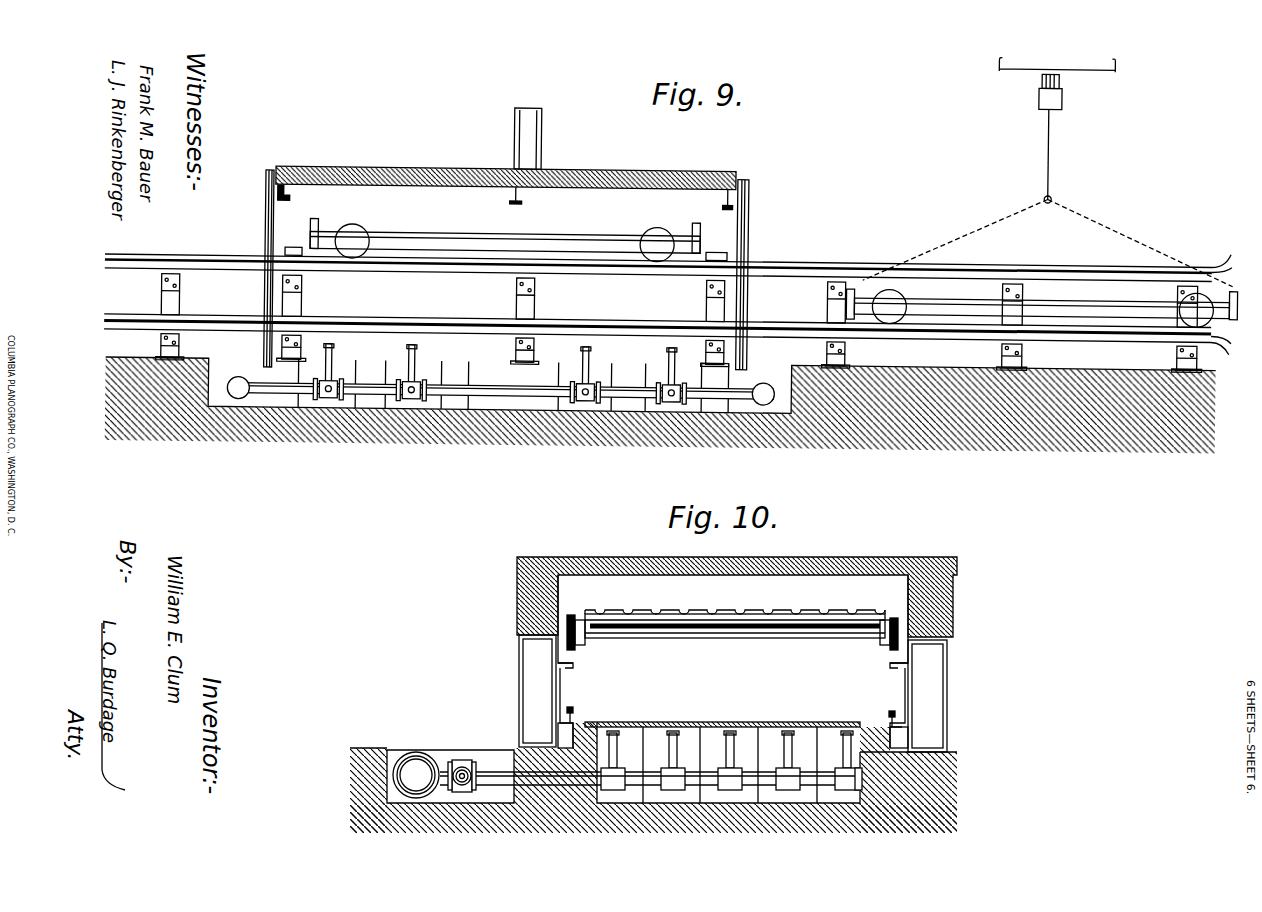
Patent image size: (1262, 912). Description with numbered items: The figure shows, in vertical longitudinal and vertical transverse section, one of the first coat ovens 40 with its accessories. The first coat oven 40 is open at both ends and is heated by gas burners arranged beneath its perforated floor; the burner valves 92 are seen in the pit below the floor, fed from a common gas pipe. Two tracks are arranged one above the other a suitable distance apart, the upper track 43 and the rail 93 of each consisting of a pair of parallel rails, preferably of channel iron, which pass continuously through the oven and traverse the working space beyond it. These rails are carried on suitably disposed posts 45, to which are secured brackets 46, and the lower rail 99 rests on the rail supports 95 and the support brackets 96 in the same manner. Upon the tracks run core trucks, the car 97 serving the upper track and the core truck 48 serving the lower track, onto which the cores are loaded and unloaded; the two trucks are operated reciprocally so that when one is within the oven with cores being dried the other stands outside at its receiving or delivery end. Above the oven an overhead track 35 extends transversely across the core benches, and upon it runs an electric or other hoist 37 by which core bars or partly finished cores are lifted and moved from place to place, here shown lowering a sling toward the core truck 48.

In FIG. 9, the overhead track 35 is at (1057, 75).
In FIG. 9, the hoist 37 is at (1053, 103).
In FIG. 9, the first coat oven 40 is at (507, 239).
In FIG. 10, the first coat oven 40 is at (737, 652).
In FIG. 9, the upper track 43 is at (794, 256).
In FIG. 9, the post 45 is at (1003, 345).
In FIG. 10, the post 45 is at (517, 687).
In FIG. 9, the bracket 46 is at (180, 283).
In FIG. 9, the core truck 48 is at (962, 300).
In FIG. 9, the burner valve 92 is at (416, 343).
In FIG. 10, the burner valve 92 is at (729, 737).
In FIG. 9, the rail 93 is at (233, 270).
In FIG. 10, the rail 93 is at (574, 664).
In FIG. 9, the rail support 95 is at (172, 307).
In FIG. 10, the support bracket 96 is at (557, 723).
In FIG. 9, the car 97 is at (575, 238).
In FIG. 10, the car 97 is at (703, 633).
In FIG. 9, the lower rail 99 is at (243, 315).
In FIG. 10, the lower rail 99 is at (571, 708).